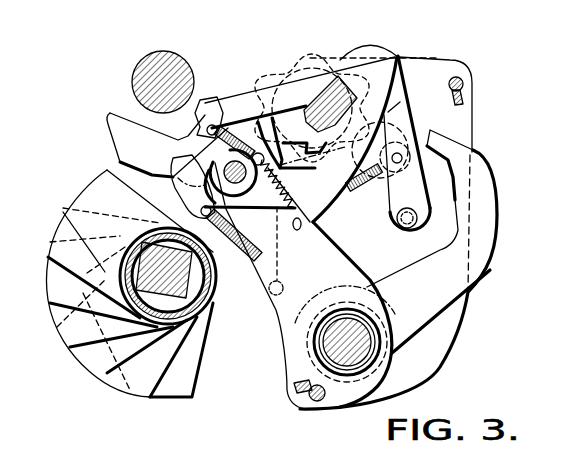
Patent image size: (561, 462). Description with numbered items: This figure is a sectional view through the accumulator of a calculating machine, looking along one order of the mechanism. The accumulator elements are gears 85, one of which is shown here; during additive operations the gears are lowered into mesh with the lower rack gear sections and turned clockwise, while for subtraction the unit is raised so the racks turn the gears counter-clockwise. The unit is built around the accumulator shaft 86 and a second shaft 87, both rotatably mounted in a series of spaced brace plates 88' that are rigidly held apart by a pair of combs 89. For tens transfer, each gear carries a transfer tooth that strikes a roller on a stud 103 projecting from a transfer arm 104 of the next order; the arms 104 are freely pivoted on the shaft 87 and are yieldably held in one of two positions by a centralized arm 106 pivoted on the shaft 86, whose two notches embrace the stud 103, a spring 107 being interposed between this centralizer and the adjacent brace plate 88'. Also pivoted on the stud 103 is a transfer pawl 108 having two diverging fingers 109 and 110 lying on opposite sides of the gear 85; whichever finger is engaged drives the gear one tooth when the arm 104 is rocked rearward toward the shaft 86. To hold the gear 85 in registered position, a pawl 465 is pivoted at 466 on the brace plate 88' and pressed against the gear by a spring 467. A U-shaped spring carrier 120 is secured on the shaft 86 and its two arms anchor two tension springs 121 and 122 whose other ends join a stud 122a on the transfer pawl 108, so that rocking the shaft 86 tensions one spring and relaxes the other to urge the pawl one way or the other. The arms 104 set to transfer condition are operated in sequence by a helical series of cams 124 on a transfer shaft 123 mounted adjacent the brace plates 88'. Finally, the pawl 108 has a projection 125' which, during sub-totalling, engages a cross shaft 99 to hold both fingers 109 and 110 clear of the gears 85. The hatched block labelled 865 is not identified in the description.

The gear 85 is at (408, 113).
The accumulator shaft 86 is at (389, 64).
The second shaft 87 is at (372, 348).
The brace plate 88' is at (476, 54).
The comb 89 is at (462, 100).
The cross shaft 99 is at (133, 87).
The stud 103 is at (183, 152).
The transfer arm 104 is at (273, 288).
The centralized arm 106 is at (180, 188).
The spring 107 is at (258, 245).
The transfer pawl 108 is at (116, 162).
The finger 109 is at (288, 68).
The finger 110 is at (338, 197).
The U-shaped spring carrier 120 is at (303, 60).
The tension spring 121 is at (230, 103).
The tension spring 122 is at (290, 212).
The stud 122a is at (262, 152).
The transfer shaft 123 is at (205, 297).
The cam 124 is at (178, 344).
The projection 125' is at (217, 137).
The pawl 465 is at (400, 102).
The pivot 466 is at (410, 238).
The spring 467 is at (378, 188).
The pawl block 865 is at (322, 57).